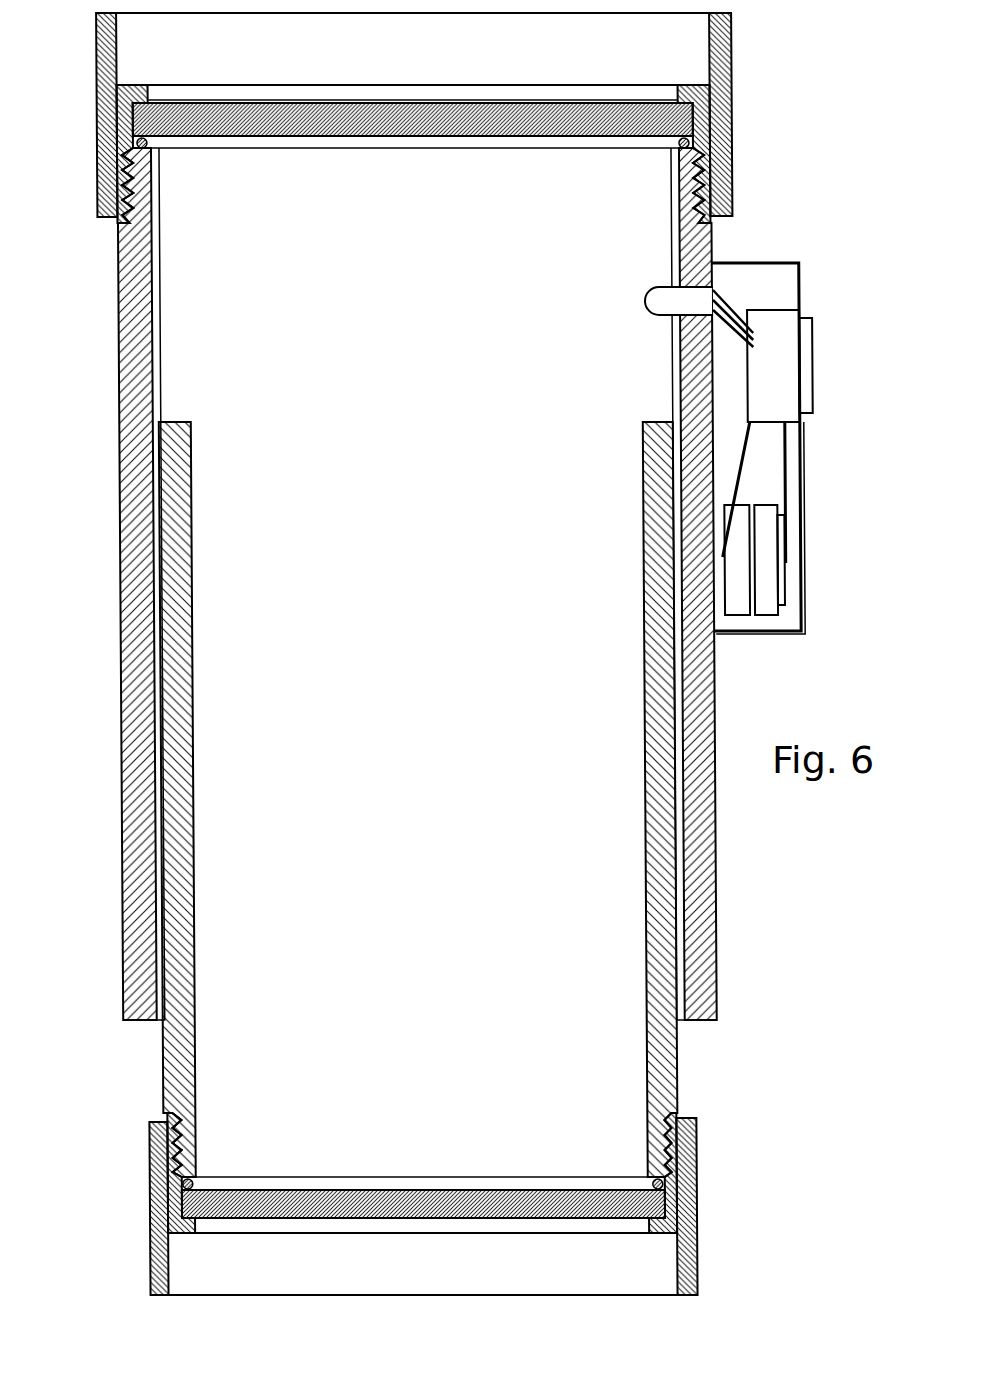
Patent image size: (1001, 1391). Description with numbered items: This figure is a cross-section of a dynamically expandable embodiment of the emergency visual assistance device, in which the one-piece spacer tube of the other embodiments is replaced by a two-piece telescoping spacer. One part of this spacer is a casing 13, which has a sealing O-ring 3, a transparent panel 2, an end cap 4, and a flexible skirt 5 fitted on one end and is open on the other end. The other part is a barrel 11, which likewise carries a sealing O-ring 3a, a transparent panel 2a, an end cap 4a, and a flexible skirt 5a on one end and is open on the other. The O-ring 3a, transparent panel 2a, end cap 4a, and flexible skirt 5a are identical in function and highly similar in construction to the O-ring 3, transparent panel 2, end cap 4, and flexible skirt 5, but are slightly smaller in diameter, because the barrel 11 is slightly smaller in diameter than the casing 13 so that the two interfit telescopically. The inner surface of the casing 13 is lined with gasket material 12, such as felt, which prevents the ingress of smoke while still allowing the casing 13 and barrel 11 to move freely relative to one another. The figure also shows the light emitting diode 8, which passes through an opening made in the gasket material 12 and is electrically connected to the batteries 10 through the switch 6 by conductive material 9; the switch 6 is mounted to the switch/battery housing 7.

The transparent panel 2 is at (143, 123).
The sealing O-ring 3 is at (690, 140).
The end cap 4 is at (120, 207).
The flexible skirt 5 is at (724, 52).
The switch 6 is at (788, 362).
The switch/battery housing 7 is at (800, 588).
The light emitting diode 8 is at (714, 262).
The conductive material 9 is at (725, 300).
The batteries 10 is at (768, 583).
The barrel 11 is at (180, 1043).
The gasket material 12 is at (163, 965).
The casing 13 is at (125, 300).
The transparent panel 2a is at (185, 1205).
The sealing O-ring 3a is at (665, 1181).
The end cap 4a is at (168, 1115).
The flexible skirt 5a is at (688, 1253).